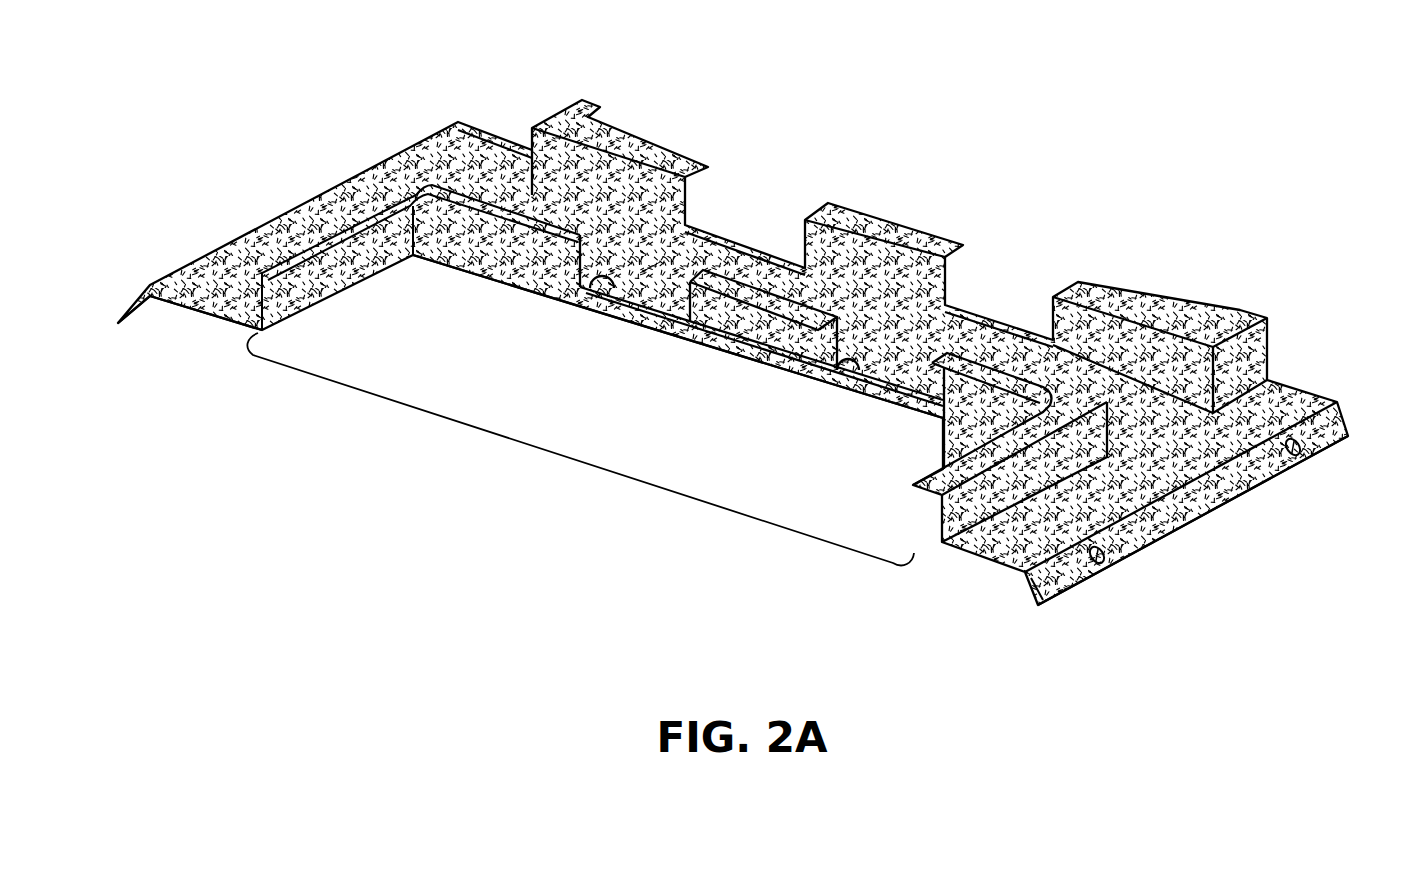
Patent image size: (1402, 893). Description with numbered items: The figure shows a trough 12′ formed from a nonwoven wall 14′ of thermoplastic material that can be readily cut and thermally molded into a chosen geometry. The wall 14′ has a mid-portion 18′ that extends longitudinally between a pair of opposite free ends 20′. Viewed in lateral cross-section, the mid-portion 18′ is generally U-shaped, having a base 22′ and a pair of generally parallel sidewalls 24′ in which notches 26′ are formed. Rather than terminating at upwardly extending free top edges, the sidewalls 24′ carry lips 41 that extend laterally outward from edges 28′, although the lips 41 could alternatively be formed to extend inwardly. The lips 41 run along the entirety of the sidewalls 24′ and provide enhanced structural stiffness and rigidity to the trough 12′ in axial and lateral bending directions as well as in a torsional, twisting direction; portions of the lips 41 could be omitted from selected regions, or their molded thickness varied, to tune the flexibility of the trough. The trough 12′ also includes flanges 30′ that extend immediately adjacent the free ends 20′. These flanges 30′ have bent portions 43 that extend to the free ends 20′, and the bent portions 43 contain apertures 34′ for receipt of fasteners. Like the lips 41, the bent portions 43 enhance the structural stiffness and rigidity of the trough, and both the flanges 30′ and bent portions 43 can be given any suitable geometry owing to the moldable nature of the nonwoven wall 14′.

The trough 12′ is at (1003, 182).
The nonwoven wall 14′ is at (1099, 283).
The mid-portion 18′ is at (580, 449).
The free ends 20′ is at (160, 307).
The base 22′ is at (660, 262).
The sidewalls 24′ is at (925, 288).
The notches 26′ is at (732, 240).
The edges 28′ is at (641, 158).
The flanges 30′ is at (400, 175).
The apertures 34′ is at (1300, 454).
The lips 41 is at (350, 250).
The bent portions 43 is at (118, 315).